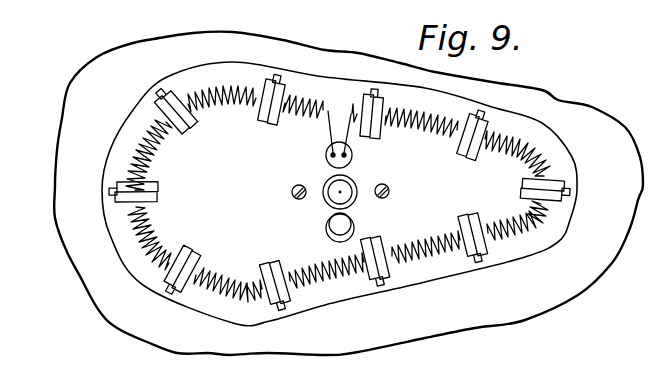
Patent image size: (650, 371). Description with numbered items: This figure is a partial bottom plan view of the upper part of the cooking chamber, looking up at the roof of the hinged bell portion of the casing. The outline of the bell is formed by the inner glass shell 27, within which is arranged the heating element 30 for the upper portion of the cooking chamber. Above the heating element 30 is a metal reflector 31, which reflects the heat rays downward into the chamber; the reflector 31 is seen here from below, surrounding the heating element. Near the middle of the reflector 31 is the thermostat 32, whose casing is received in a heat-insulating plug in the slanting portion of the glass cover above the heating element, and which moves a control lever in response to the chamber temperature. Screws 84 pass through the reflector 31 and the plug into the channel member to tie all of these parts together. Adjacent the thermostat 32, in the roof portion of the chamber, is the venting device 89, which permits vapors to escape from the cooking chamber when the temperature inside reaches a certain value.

The inner glass shell 27 is at (85, 83).
The metal reflector 31 is at (114, 155).
The heating element 30 is at (150, 153).
The thermostat 32 is at (332, 182).
The screws 84 is at (292, 195).
The venting device 89 is at (330, 217).